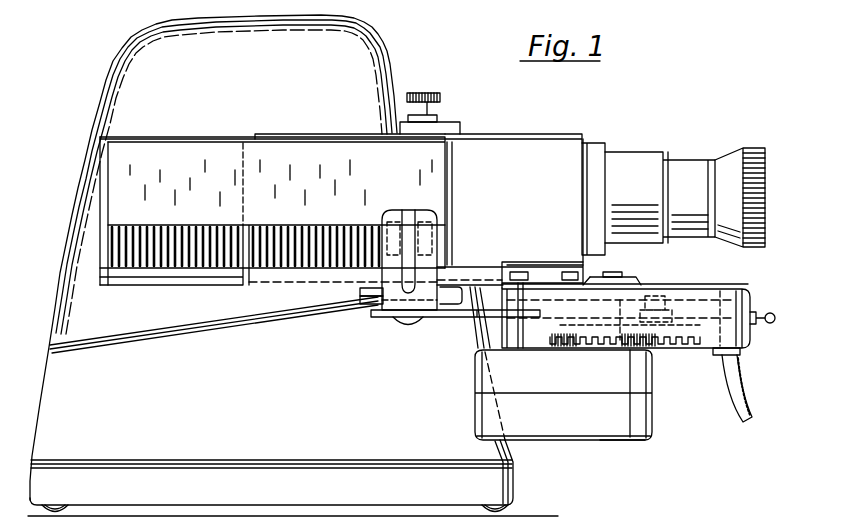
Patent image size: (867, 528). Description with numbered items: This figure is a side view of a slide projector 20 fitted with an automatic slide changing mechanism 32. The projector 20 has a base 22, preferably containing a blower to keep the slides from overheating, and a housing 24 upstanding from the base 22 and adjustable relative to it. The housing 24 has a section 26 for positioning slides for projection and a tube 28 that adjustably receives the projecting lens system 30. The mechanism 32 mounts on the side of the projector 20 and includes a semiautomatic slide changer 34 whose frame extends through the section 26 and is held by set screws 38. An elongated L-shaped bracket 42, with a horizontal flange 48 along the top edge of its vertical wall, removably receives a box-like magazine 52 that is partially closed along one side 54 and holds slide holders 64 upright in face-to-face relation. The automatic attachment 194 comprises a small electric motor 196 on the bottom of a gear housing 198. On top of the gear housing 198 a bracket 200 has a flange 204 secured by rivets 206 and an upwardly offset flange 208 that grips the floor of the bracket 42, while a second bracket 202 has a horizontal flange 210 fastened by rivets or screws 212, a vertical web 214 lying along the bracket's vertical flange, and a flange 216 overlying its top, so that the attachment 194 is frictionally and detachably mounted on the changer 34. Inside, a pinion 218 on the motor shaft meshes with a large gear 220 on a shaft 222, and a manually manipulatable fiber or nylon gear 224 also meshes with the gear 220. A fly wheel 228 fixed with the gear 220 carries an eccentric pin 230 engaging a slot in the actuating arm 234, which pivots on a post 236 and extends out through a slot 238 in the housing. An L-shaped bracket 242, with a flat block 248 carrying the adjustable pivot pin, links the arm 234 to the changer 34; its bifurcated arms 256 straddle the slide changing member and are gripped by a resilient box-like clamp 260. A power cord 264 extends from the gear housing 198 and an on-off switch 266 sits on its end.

The slide projector 20 is at (100, 87).
The base 22 is at (495, 484).
The housing 24 is at (358, 43).
The section 26 is at (440, 130).
The tube 28 is at (585, 143).
The projecting lens system 30 is at (695, 168).
The automatic slide changing mechanism 32 is at (432, 360).
The semiautomatic slide changer 34 is at (360, 312).
The set screws 38 is at (423, 92).
The L-shaped bracket 42 is at (541, 133).
The horizontal flange 48 is at (298, 133).
The magazine 52 is at (190, 168).
The side 54 is at (120, 182).
The slide holders 64 is at (110, 247).
The attachment 194 is at (663, 382).
The electric motor 196 is at (639, 442).
The gear housing 198 is at (735, 288).
The bracket 200 is at (632, 282).
The second bracket 202 is at (560, 330).
The flange 204 is at (640, 283).
The rivets 206 is at (612, 272).
The upwardly offset flange 208 is at (593, 278).
The horizontal flange 210 is at (540, 262).
The rivets or screws 212 is at (522, 270).
The vertical web 214 is at (530, 262).
The flange 216 is at (517, 262).
The pinion 218 is at (594, 348).
The large gear 220 is at (610, 346).
The shaft 222 is at (670, 325).
The manually manipulatable gear 224 is at (632, 378).
The fly wheel 228 is at (554, 286).
The eccentric pin 230 is at (655, 298).
The actuating arm 234 is at (457, 318).
The post 236 is at (742, 347).
The slot 238 is at (508, 350).
The L-shaped bracket 242 is at (382, 319).
The flat block 248 is at (404, 330).
The arms 256 is at (382, 253).
The clamp 260 is at (395, 210).
The power cord 264 is at (747, 371).
The on-off switch 266 is at (771, 312).